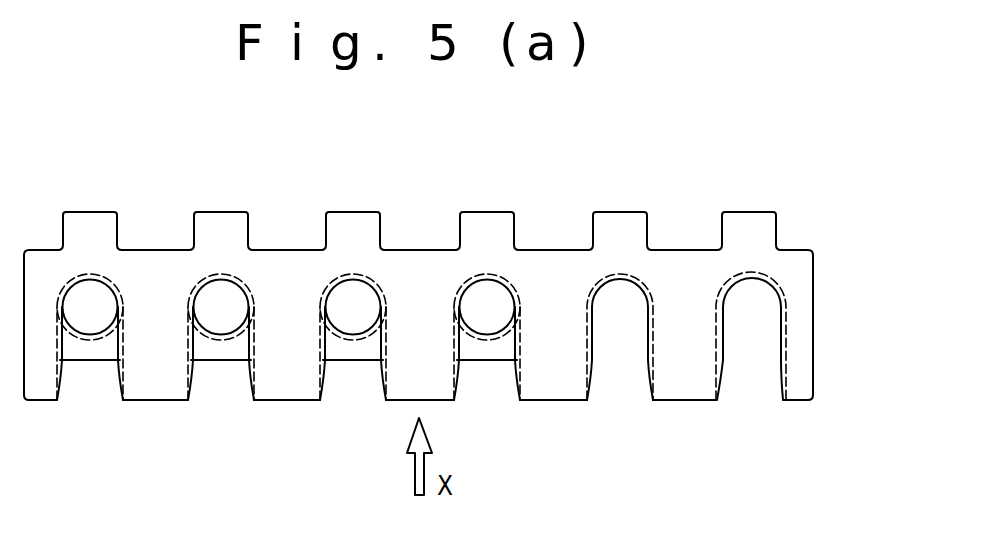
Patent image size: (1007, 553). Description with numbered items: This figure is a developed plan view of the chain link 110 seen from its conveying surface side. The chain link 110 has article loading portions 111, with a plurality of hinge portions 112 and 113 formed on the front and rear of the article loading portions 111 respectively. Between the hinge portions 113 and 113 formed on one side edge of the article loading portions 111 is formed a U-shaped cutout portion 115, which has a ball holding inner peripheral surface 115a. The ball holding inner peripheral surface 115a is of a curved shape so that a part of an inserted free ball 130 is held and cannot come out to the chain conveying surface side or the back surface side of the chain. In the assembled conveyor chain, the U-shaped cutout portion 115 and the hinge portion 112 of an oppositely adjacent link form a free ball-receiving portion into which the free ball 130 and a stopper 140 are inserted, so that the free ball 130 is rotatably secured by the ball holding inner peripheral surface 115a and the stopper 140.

The chain link 110 is at (441, 183).
The article loading portion 111 is at (287, 272).
The hinge portion 112 is at (225, 227).
The hinge portion 113 is at (293, 380).
The U-shaped cutout portion 115 is at (777, 332).
The ball holding inner peripheral surface 115a is at (786, 317).
The free ball 130 is at (101, 306).
The stopper 140 is at (90, 353).